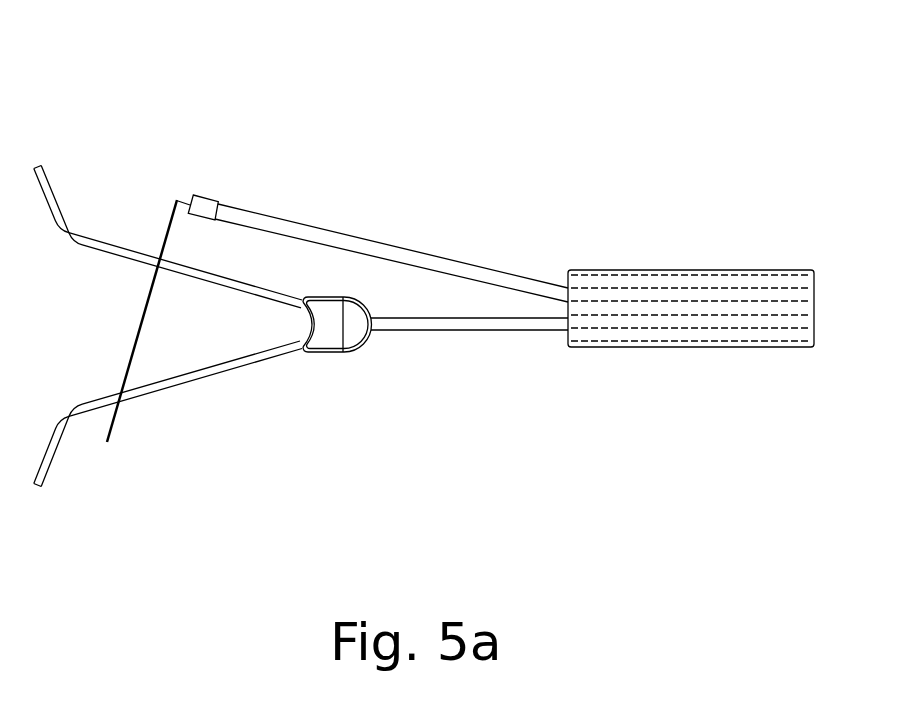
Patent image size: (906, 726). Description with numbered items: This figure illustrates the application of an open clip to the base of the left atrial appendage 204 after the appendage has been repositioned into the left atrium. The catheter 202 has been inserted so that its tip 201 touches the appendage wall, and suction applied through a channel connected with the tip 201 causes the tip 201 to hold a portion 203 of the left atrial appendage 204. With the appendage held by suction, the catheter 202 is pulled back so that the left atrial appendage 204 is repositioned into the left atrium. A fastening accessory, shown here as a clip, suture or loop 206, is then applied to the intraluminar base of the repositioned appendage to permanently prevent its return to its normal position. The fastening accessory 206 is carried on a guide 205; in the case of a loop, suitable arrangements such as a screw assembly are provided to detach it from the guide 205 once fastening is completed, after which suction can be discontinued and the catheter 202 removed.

The tip 201 is at (350, 360).
The catheter 202 is at (693, 262).
The portion of the left atrial appendage 203 is at (288, 328).
The left atrial appendage 204 is at (190, 387).
The guide 205 is at (387, 238).
The clip, suture or loop 206 is at (162, 220).